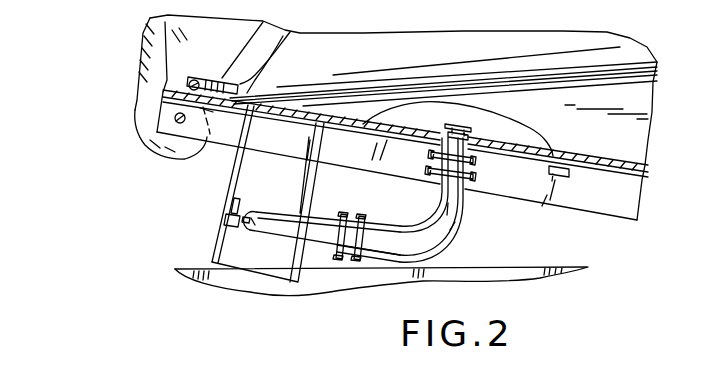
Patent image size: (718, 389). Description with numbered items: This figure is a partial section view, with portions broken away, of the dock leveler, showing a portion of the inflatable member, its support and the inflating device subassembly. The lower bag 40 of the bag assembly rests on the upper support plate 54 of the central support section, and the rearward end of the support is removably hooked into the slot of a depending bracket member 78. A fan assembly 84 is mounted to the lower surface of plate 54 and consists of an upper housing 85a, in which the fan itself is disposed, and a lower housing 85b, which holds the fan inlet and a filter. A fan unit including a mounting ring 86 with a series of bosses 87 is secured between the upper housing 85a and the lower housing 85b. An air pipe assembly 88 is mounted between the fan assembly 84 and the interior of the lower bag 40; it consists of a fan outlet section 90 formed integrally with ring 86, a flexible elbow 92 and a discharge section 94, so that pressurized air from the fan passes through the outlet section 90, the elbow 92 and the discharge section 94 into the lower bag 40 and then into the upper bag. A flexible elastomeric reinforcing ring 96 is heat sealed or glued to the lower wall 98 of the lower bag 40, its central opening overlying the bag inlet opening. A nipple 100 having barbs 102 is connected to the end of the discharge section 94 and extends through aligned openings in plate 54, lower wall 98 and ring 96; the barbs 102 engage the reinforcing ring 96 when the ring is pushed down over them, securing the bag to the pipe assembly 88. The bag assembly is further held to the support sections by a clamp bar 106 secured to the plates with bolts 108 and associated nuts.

The lower bag 40 is at (650, 128).
The upper support plate 54 is at (562, 176).
The bracket member 78 is at (160, 158).
The fan assembly 84 is at (233, 168).
The upper housing 85a is at (232, 200).
The lower housing 85b is at (288, 280).
The mounting ring 86 is at (228, 221).
The bosses 87 is at (241, 227).
The air pipe assembly 88 is at (437, 258).
The fan outlet section 90 is at (282, 212).
The flexible elbow 92 is at (452, 230).
The discharge section 94 is at (472, 181).
The reinforcing ring 96 is at (497, 142).
The lower wall 98 is at (543, 151).
The nipple 100 is at (478, 159).
The barbs 102 is at (473, 127).
The clamp bar 106 is at (234, 78).
The bolts 108 is at (209, 77).